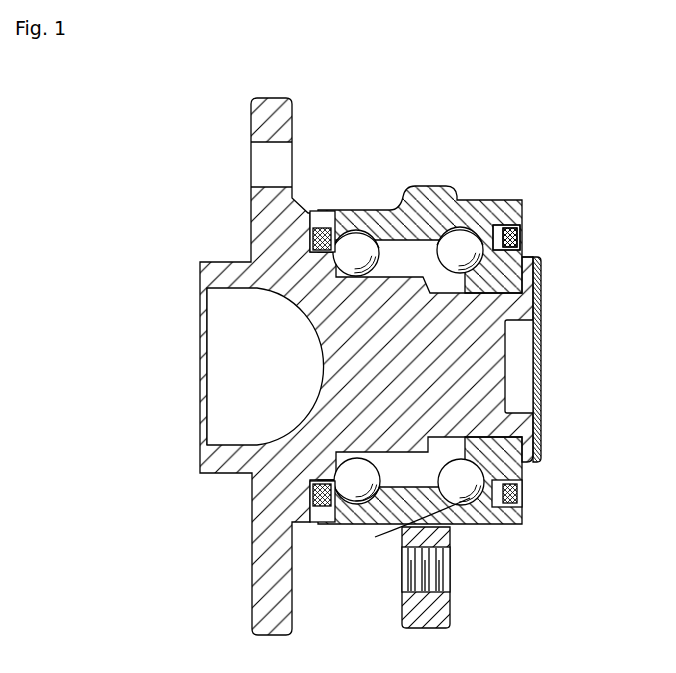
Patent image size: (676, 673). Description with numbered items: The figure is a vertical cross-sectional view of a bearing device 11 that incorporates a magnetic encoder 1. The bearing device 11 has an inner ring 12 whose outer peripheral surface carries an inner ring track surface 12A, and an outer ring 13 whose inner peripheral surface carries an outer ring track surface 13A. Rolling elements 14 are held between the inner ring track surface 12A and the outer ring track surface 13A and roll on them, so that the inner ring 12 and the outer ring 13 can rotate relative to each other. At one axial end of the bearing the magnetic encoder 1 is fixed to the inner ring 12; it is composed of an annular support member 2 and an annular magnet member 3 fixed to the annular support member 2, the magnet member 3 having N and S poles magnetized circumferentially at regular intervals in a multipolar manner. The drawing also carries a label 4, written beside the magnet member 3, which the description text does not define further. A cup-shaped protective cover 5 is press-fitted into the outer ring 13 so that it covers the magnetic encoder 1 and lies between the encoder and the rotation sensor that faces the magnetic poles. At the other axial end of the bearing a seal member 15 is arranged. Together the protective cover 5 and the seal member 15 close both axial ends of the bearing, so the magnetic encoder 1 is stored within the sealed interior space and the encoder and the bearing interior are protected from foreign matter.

The magnetic encoder 1 is at (595, 150).
The annular support member 2 is at (505, 224).
The annular magnet member 3 is at (510, 237).
The encoder 4 is at (524, 234).
The protective cover 5 is at (556, 326).
The bearing device 11 is at (400, 154).
The inner ring 12 is at (487, 370).
The inner ring track surface 12A is at (316, 320).
The outer ring 13 is at (425, 204).
The outer ring track surface 13A is at (343, 229).
The rolling elements 14 is at (352, 497).
The seal member 15 is at (318, 218).